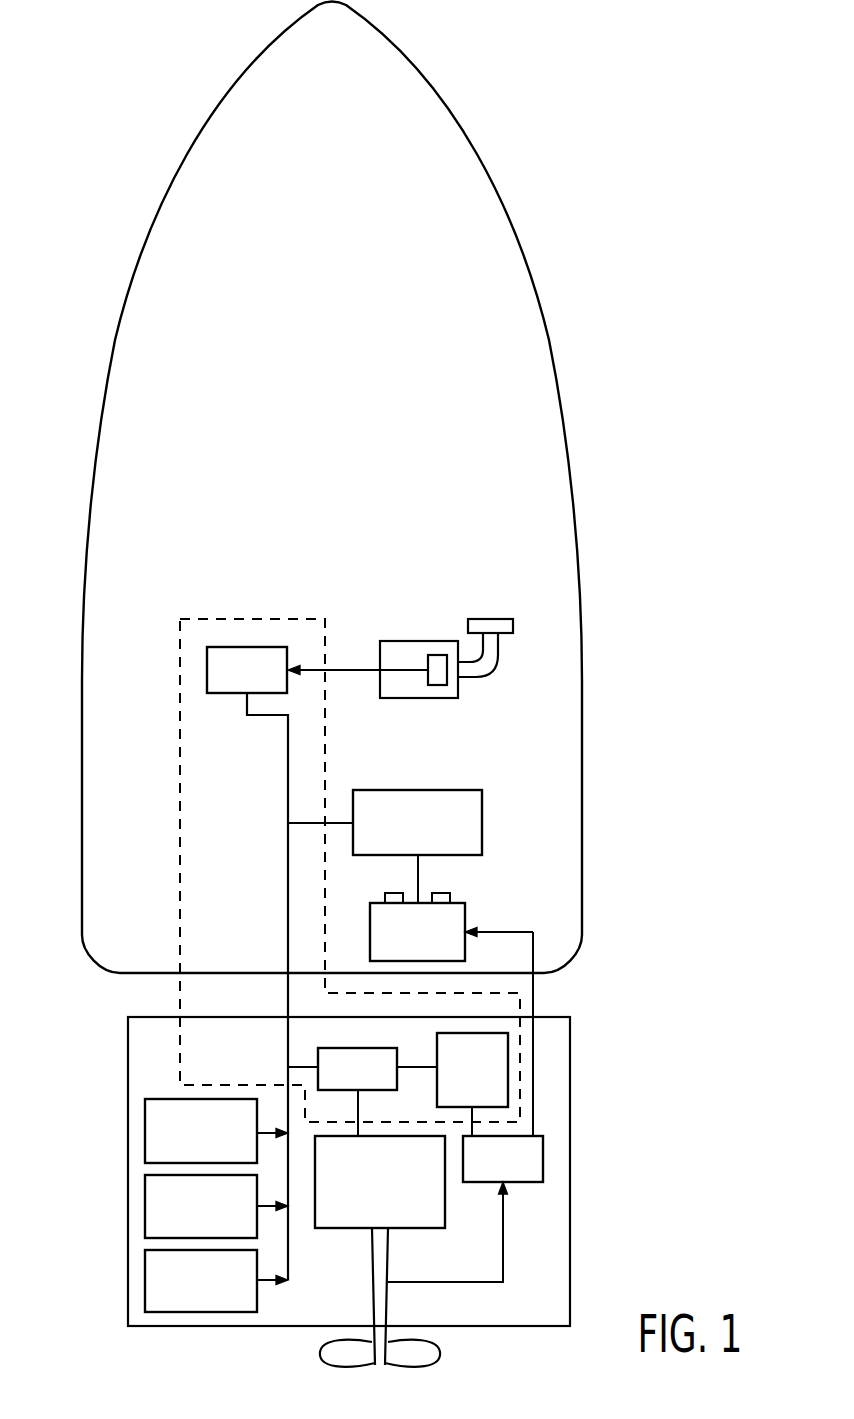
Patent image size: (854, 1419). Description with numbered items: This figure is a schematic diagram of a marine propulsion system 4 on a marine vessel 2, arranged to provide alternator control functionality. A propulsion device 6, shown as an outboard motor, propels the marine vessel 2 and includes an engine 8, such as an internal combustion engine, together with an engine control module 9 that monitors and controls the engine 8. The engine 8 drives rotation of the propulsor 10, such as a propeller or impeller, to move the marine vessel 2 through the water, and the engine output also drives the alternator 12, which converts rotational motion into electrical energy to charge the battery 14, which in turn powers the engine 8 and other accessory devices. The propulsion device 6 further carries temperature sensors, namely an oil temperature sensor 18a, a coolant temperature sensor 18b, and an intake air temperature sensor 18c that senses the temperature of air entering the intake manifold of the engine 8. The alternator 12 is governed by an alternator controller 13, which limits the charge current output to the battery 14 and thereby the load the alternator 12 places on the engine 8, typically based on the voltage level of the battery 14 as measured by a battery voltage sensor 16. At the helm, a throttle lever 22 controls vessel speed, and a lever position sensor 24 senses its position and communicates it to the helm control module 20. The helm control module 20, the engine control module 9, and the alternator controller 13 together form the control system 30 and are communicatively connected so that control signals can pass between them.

The marine vessel 2 is at (447, 92).
The marine propulsion system 4 is at (320, 450).
The propulsion device 6 is at (503, 1327).
The engine 8 is at (407, 1229).
The engine control module 9 is at (345, 1047).
The propulsor 10 is at (320, 1349).
The alternator 12 is at (520, 1183).
The alternator controller 13 is at (437, 1050).
The battery 14 is at (369, 932).
The battery voltage sensor 16 is at (418, 789).
The oil temperature sensor 18a is at (145, 1133).
The coolant temperature sensor 18b is at (145, 1206).
The intake air temperature sensor 18c is at (145, 1280).
The helm control module 20 is at (223, 694).
The throttle lever 22 is at (490, 618).
The lever position sensor 24 is at (437, 686).
The control system 30 is at (221, 614).